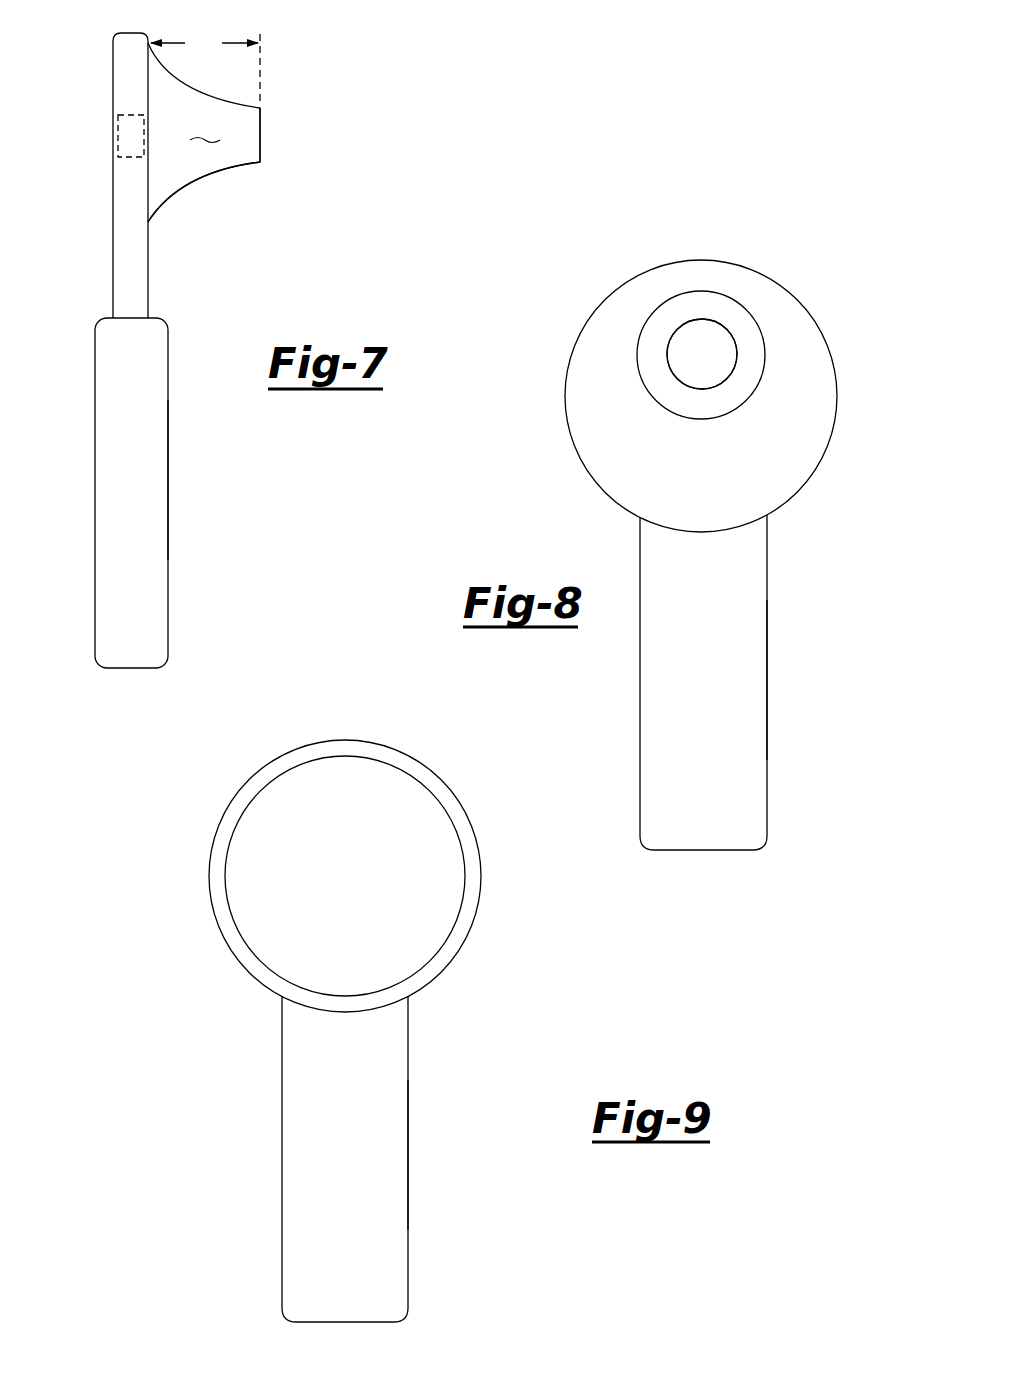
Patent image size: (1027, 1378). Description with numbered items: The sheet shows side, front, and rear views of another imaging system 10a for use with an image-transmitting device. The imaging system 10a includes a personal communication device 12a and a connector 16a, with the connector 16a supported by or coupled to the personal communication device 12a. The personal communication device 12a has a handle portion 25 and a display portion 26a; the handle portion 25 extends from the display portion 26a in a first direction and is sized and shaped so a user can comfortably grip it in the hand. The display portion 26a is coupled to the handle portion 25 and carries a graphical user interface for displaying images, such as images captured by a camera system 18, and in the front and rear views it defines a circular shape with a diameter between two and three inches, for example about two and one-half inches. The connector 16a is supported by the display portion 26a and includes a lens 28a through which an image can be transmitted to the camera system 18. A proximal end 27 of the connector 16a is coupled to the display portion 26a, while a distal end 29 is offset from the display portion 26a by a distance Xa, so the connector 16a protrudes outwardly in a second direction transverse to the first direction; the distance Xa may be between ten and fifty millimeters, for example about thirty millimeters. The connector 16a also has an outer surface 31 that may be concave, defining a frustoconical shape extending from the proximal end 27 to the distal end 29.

In FIG. 7, the imaging system 10a is at (330, 108).
In FIG. 8, the imaging system 10a is at (815, 252).
In FIG. 9, the imaging system 10a is at (175, 885).
In FIG. 7, the personal communication device 12a is at (140, 433).
In FIG. 8, the personal communication device 12a is at (738, 612).
In FIG. 9, the personal communication device 12a is at (380, 1083).
In FIG. 7, the connector 16a is at (200, 137).
In FIG. 8, the connector 16a is at (708, 403).
In FIG. 7, the camera system 18 is at (128, 112).
In FIG. 7, the handle portion 25 is at (168, 480).
In FIG. 8, the handle portion 25 is at (767, 660).
In FIG. 9, the handle portion 25 is at (408, 1130).
In FIG. 7, the display portion 26a is at (113, 185).
In FIG. 8, the display portion 26a is at (701, 396).
In FIG. 9, the display portion 26a is at (427, 890).
In FIG. 7, the proximal end 27 is at (150, 182).
In FIG. 8, the lens 28a is at (703, 338).
In FIG. 7, the distal end 29 is at (262, 147).
In FIG. 8, the distal end 29 is at (737, 365).
In FIG. 7, the outer surface 31 is at (205, 128).
In FIG. 7, the distance Xa is at (205, 69).